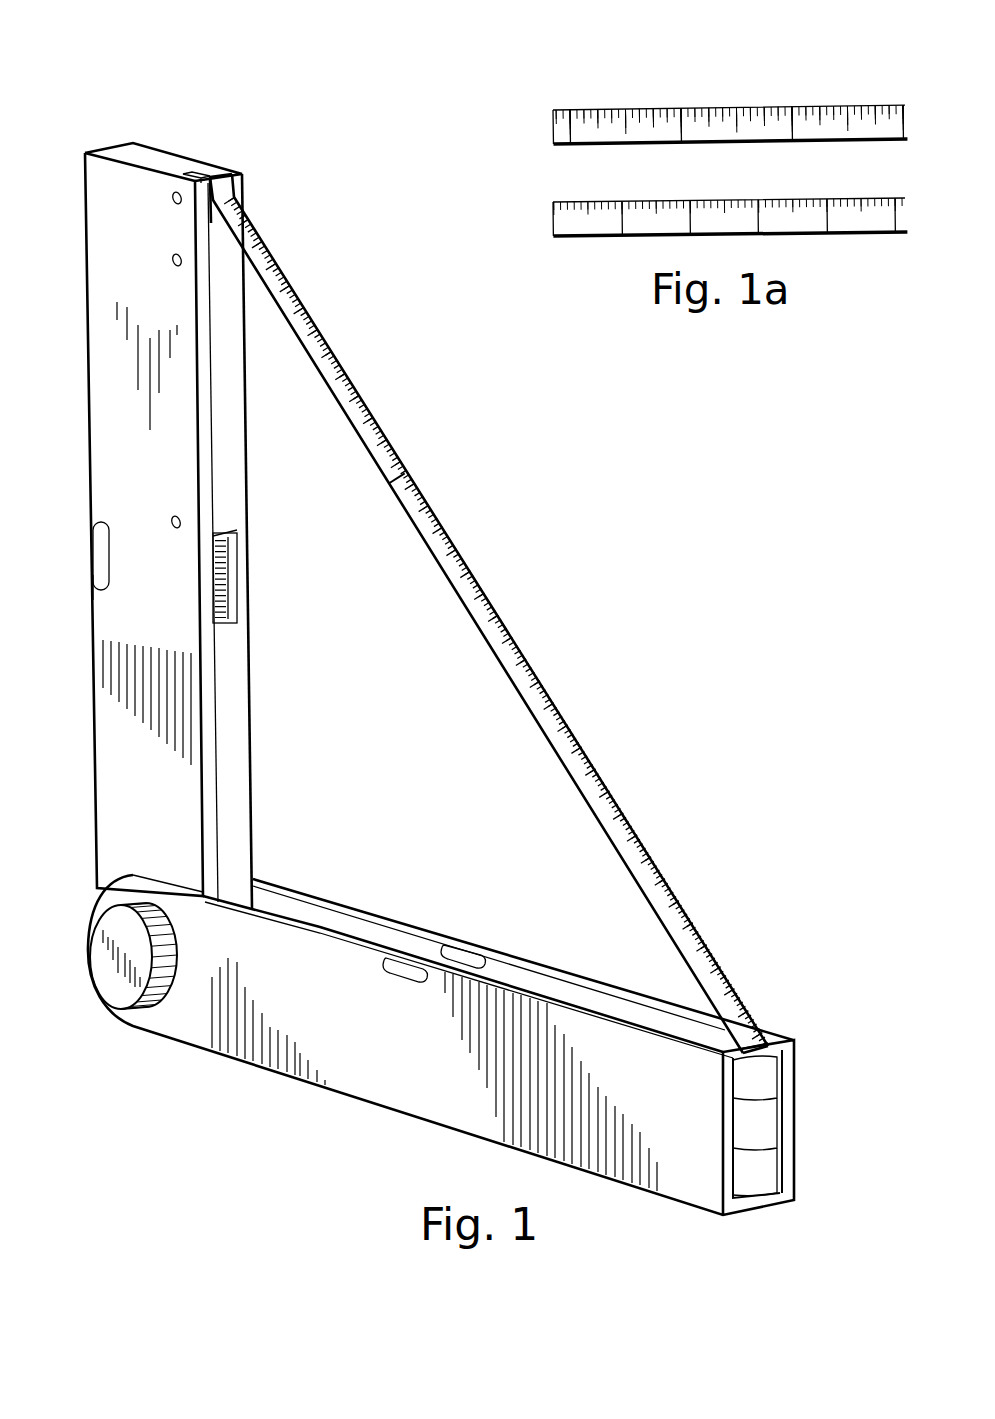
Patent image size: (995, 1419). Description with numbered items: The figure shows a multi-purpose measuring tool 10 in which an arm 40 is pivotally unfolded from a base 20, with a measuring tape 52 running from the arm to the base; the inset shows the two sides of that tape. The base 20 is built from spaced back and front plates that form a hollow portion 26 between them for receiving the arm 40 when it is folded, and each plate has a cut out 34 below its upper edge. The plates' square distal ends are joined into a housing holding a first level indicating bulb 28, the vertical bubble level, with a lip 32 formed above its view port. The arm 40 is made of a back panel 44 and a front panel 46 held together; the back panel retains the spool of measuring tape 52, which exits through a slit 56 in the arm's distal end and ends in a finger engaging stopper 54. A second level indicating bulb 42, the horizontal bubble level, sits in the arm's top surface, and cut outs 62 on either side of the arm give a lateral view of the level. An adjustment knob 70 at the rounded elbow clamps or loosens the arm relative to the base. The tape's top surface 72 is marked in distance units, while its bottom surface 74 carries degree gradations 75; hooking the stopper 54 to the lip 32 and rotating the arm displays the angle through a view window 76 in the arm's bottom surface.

In FIG. 1, the multi-purpose measuring tool 10 is at (641, 598).
In FIG. 1, the base 20 is at (342, 1110).
In FIG. 1, the hollow portion 26 is at (335, 912).
In FIG. 1, the first level indicating bulb 28 is at (767, 1118).
In FIG. 1, the lip 32 is at (775, 1052).
In FIG. 1, the cut out 34 is at (409, 956).
In FIG. 1, the arm 40 is at (68, 342).
In FIG. 1, the second level indicating bulb 42 is at (98, 558).
In FIG. 1, the back panel 44 is at (232, 491).
In FIG. 1, the front panel 46 is at (130, 781).
In FIG. 1, the measuring tape 52 is at (479, 578).
In FIG. 1, the finger engaging stopper 54 is at (749, 1023).
In FIG. 1, the slit 56 is at (212, 164).
In FIG. 1, the cut outs 62 is at (93, 578).
In FIG. 1, the adjustment knob 70 is at (112, 965).
In FIG. 1, the top surface 72 is at (354, 386).
In FIG. 1A, the top surface 72 is at (702, 107).
In FIG. 1, the bottom surface 74 is at (391, 490).
In FIG. 1A, the bottom surface 74 is at (596, 200).
In FIG. 1, the gradations 75 is at (230, 601).
In FIG. 1A, the gradations 75 is at (657, 213).
In FIG. 1, the view window 76 is at (235, 578).